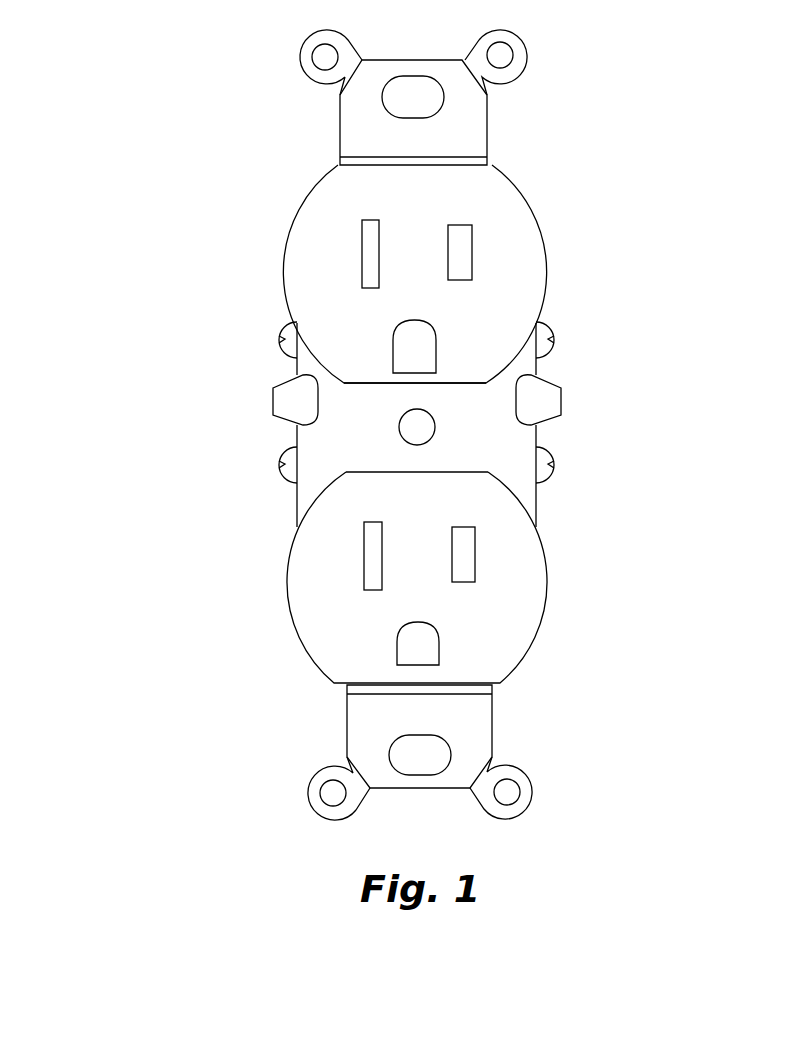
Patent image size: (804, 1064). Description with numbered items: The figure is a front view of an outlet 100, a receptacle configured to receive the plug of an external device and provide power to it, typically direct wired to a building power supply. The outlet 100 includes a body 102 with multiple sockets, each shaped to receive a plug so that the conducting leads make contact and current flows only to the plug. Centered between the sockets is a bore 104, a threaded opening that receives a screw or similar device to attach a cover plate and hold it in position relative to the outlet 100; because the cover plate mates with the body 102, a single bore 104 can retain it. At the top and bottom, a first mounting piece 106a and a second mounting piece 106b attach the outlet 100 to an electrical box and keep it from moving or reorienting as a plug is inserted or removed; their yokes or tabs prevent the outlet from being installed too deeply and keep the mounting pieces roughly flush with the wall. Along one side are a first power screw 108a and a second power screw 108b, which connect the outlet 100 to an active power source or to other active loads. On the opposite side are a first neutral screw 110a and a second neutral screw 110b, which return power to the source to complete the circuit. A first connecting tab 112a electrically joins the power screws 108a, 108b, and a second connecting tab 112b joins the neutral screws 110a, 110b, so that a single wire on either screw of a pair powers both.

The outlet 100 is at (152, 56).
The body 102 is at (477, 402).
The bore 104 is at (408, 433).
The first mounting piece 106a is at (468, 128).
The second mounting piece 106b is at (468, 768).
The first power screw 108a is at (550, 320).
The second power screw 108b is at (550, 450).
The first neutral screw 110a is at (283, 350).
The second neutral screw 110b is at (290, 465).
The first connecting tab 112a is at (553, 398).
The second connecting tab 112b is at (292, 408).